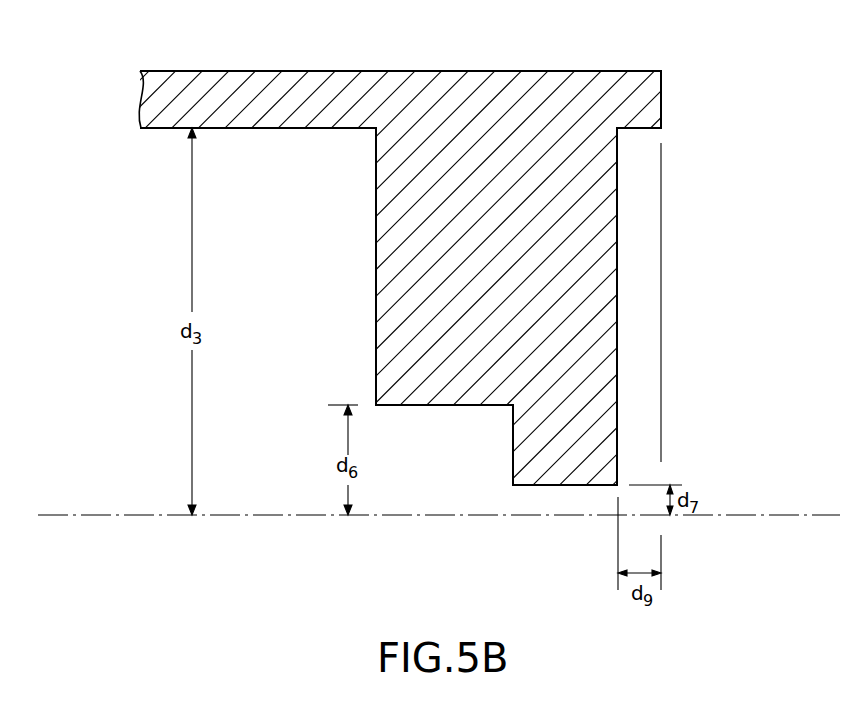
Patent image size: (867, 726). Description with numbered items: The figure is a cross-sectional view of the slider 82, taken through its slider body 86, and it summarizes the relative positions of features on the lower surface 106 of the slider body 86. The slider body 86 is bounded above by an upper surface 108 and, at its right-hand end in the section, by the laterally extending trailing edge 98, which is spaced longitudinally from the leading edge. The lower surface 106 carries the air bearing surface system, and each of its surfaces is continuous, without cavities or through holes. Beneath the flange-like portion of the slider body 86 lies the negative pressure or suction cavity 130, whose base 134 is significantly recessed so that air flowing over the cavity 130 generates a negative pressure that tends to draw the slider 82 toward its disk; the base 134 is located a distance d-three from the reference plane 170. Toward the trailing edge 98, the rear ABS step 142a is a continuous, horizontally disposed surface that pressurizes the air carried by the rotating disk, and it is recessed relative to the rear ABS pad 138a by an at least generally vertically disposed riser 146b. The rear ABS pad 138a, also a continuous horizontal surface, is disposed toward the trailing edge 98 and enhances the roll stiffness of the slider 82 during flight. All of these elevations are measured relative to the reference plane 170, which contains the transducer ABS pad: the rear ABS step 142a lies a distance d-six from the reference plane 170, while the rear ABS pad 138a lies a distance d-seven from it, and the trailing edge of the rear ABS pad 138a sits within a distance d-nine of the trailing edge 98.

The slider body 86 is at (453, 100).
The upper surface 108 is at (208, 72).
The slider 82 is at (661, 71).
The trailing edge 98 is at (661, 105).
The base of the cavity 134 is at (237, 128).
The lower surface 106 is at (307, 128).
The negative pressure cavity 130 is at (281, 241).
The rear ABS step 142a is at (397, 405).
The riser 146b is at (513, 438).
The rear ABS pad 138a is at (548, 487).
The reference plane 170 is at (216, 517).